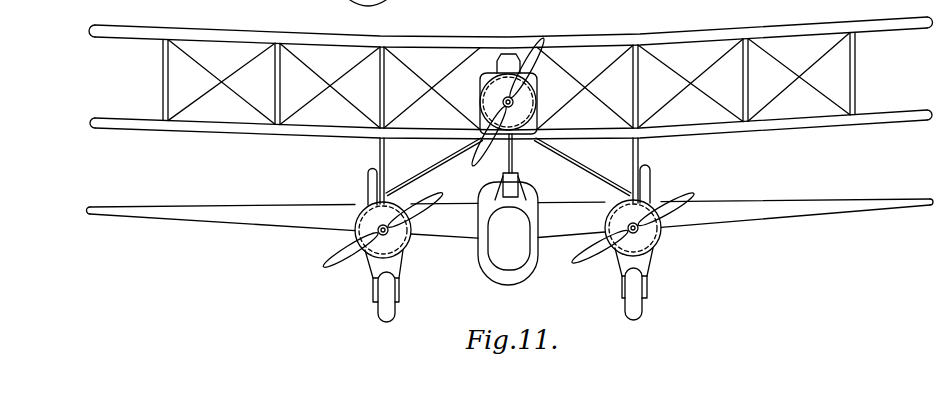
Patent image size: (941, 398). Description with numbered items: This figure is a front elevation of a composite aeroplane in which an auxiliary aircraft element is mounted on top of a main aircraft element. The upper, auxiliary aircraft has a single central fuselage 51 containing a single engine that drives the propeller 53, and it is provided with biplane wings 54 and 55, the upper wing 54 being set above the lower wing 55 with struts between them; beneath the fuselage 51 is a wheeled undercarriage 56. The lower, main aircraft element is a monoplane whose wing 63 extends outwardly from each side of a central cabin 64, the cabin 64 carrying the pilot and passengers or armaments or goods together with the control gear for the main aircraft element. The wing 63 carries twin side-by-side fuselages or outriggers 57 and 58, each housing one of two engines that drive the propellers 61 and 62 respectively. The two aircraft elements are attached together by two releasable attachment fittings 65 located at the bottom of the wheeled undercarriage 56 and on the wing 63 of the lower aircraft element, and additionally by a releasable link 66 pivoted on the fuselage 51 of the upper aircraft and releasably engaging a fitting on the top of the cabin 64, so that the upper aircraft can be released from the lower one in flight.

The central fuselage 51 is at (494, 71).
The propeller 53 is at (513, 88).
The biplane wing 54 is at (697, 33).
The biplane wing 55 is at (237, 130).
The wheeled undercarriage 56 is at (382, 166).
The fuselage or outrigger 57 is at (368, 220).
The fuselage or outrigger 58 is at (645, 240).
The propeller 61 is at (327, 268).
The propeller 62 is at (578, 266).
The monoplane wing 63 is at (802, 212).
The central cabin 64 is at (482, 257).
The releasable attachment fittings 65 is at (393, 200).
The releasable link 66 is at (507, 154).